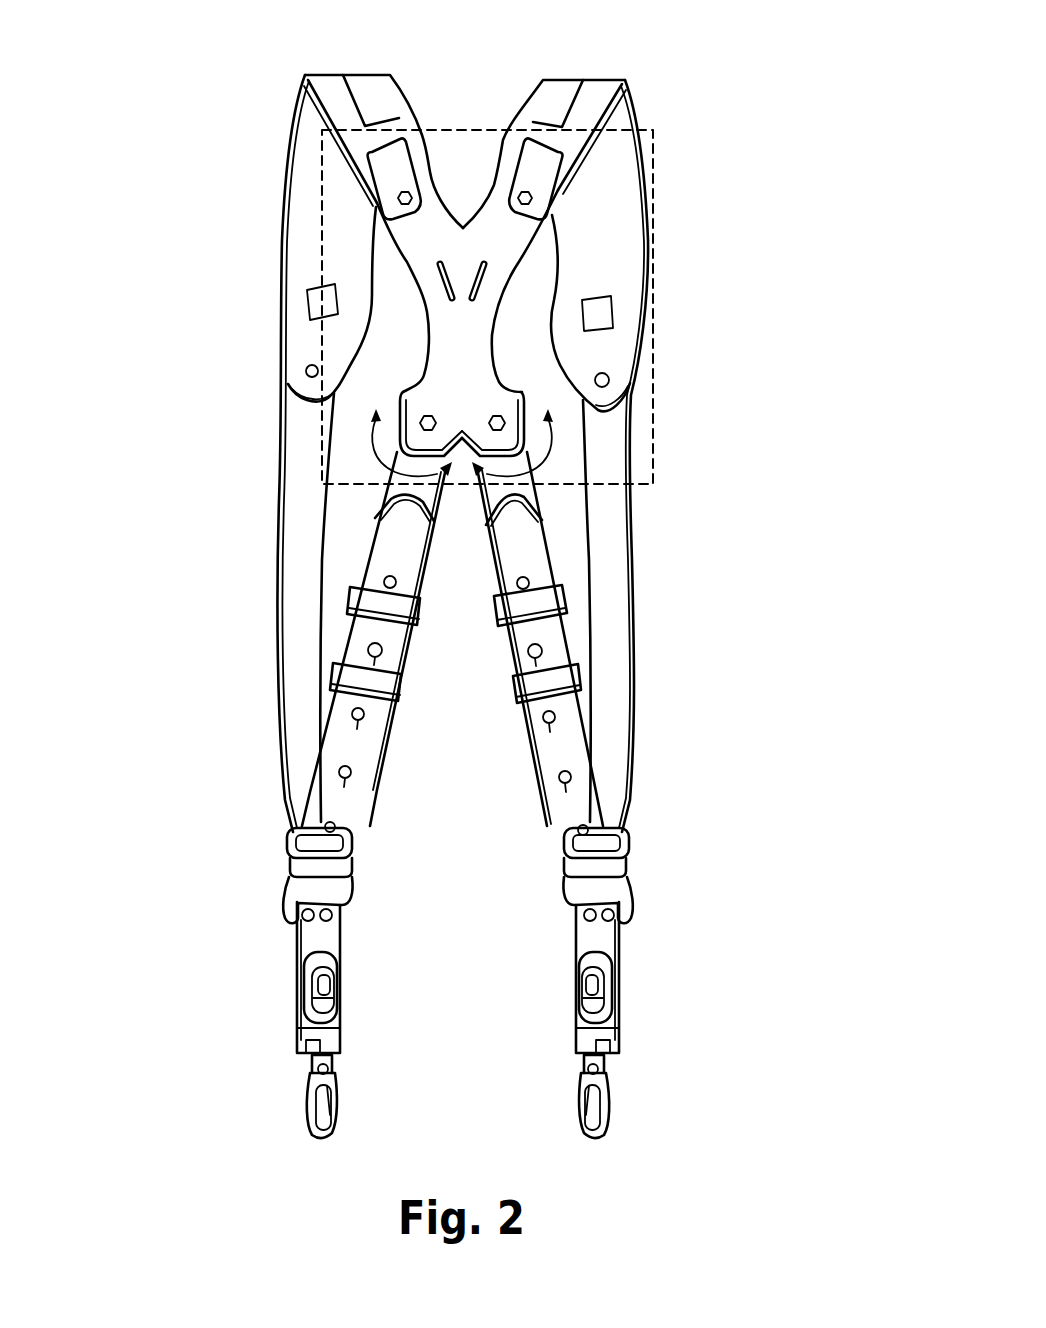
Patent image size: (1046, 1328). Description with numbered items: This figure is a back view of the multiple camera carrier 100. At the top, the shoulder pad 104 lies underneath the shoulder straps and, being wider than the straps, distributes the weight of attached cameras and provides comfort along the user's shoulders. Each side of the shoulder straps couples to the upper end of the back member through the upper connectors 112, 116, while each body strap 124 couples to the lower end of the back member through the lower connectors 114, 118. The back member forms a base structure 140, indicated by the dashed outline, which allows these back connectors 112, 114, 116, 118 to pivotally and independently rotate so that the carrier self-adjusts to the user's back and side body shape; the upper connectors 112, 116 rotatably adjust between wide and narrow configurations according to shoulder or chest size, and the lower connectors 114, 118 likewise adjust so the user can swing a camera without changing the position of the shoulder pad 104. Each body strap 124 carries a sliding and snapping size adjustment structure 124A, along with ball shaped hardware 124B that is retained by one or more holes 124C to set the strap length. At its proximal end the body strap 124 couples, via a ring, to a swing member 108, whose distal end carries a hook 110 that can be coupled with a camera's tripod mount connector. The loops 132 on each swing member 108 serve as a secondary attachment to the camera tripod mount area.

The multiple camera carrier 100 is at (159, 37).
The shoulder pad 104 is at (651, 75).
The swing member 108 is at (270, 964).
The hook 110 is at (278, 1112).
The connector 112 is at (382, 217).
The connector 114 is at (426, 402).
The connector 116 is at (545, 222).
The connector 118 is at (500, 402).
The body strap 124 is at (249, 635).
The sliding and snapping size adjustment structure 124A is at (518, 771).
The ball shaped hardware 124B is at (507, 653).
The holes 124C is at (552, 797).
The loops 132 is at (594, 989).
The base structure 140 is at (670, 378).